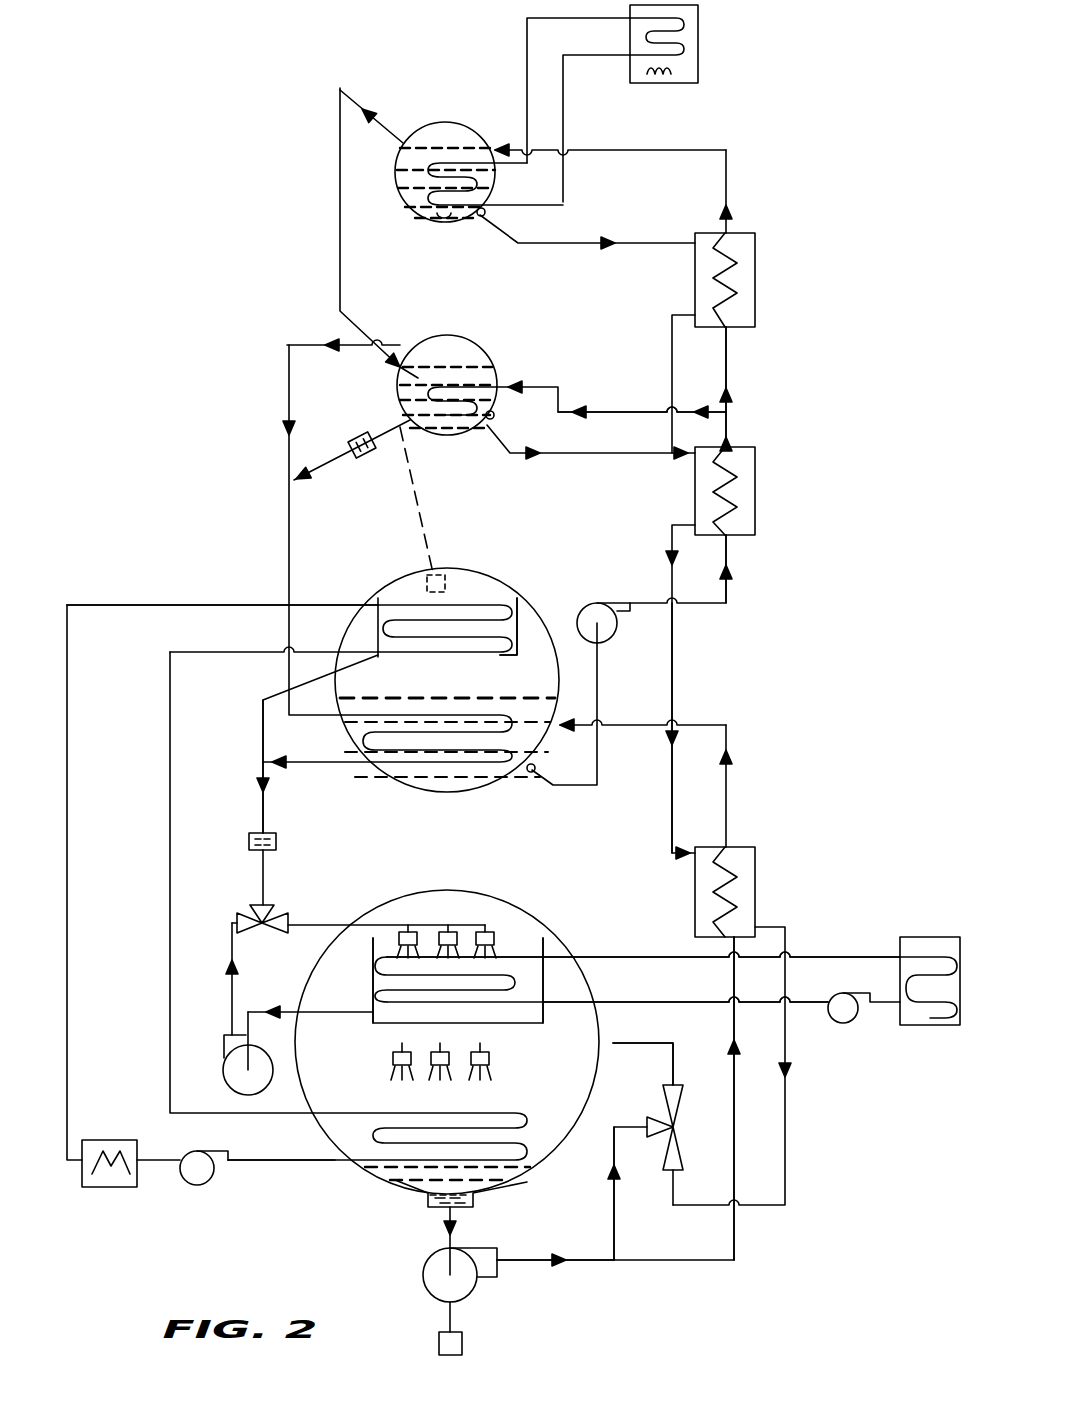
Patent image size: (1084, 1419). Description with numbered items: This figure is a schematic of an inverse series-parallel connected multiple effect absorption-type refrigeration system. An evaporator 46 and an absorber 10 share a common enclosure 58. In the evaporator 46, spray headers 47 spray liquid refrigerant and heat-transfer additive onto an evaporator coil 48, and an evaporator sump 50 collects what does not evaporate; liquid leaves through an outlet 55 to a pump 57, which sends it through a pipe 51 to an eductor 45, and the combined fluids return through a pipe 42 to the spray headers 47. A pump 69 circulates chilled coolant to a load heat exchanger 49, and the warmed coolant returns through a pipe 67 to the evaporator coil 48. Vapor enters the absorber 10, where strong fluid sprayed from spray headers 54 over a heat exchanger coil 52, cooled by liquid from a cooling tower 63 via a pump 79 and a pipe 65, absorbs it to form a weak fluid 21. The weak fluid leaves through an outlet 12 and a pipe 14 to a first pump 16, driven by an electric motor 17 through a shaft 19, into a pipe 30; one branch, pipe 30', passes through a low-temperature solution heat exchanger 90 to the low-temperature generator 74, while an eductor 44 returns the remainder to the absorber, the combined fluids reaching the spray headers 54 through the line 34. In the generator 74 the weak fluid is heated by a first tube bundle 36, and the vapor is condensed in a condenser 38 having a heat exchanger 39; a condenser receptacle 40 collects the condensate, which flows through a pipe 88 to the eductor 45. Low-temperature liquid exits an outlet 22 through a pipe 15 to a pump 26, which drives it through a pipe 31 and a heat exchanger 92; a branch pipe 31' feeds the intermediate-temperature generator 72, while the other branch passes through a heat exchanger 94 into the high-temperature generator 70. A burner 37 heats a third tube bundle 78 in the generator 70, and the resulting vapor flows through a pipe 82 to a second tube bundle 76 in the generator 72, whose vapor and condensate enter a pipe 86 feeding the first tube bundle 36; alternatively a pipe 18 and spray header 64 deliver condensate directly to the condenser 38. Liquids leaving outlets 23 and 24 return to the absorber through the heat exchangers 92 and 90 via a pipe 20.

The absorber 10 is at (342, 1068).
The outlet 12 is at (500, 1188).
The pipe 14 is at (455, 1216).
The pipe 15 is at (577, 786).
The first pump 16 is at (423, 1262).
The electric motor 17 is at (438, 1340).
The pipe 18 is at (418, 487).
The shaft 19 is at (455, 1318).
The pipe 20 is at (672, 823).
The weak fluid 21 is at (427, 1188).
The outlet 22 is at (535, 766).
The outlet 23 is at (494, 418).
The outlet 24 is at (487, 209).
The pump 26 is at (596, 600).
The pipe 30 is at (555, 1281).
The pipe 30' is at (759, 1120).
The pipe 31 is at (756, 569).
The pipe 31' is at (642, 385).
The spray supply line 34 is at (658, 1045).
The first tube bundle 36 is at (470, 762).
The burner 37 is at (700, 38).
The condenser 38 is at (473, 601).
The heat exchanger 39 is at (505, 657).
The condenser receptacle 40 is at (366, 632).
The pipe 42 is at (315, 923).
The eductor 44 is at (686, 1127).
The eductor 45 is at (268, 936).
The evaporator 46 is at (518, 936).
The spray headers 47 is at (402, 930).
The evaporator coil 48 is at (523, 1010).
The heat exchanger 49 is at (912, 937).
The evaporator sump 50 is at (545, 978).
The pipe 51 is at (232, 923).
The heat exchanger coil 52 is at (520, 1114).
The spray headers 54 is at (393, 1060).
The outlet 55 is at (373, 998).
The pump 57 is at (272, 1092).
The common enclosure 58 is at (560, 933).
The cooling tower 63 is at (111, 1190).
The spray header 64 is at (447, 578).
The pipe 65 is at (270, 1164).
The pipe 67 is at (836, 955).
The pump 69 is at (857, 1020).
The high-temperature generator 70 is at (412, 112).
The intermediate-temperature generator 72 is at (408, 333).
The low-temperature generator 74 is at (388, 567).
The second tube bundle 76 is at (458, 436).
The third tube bundle 78 is at (462, 220).
The pump 79 is at (215, 1185).
The pipe 82 is at (340, 208).
The pipe 86 is at (287, 535).
The pipe 88 is at (262, 768).
The low-temperature solution heat exchanger 90 is at (757, 875).
The heat exchanger 92 is at (757, 488).
The heat exchanger 94 is at (757, 266).